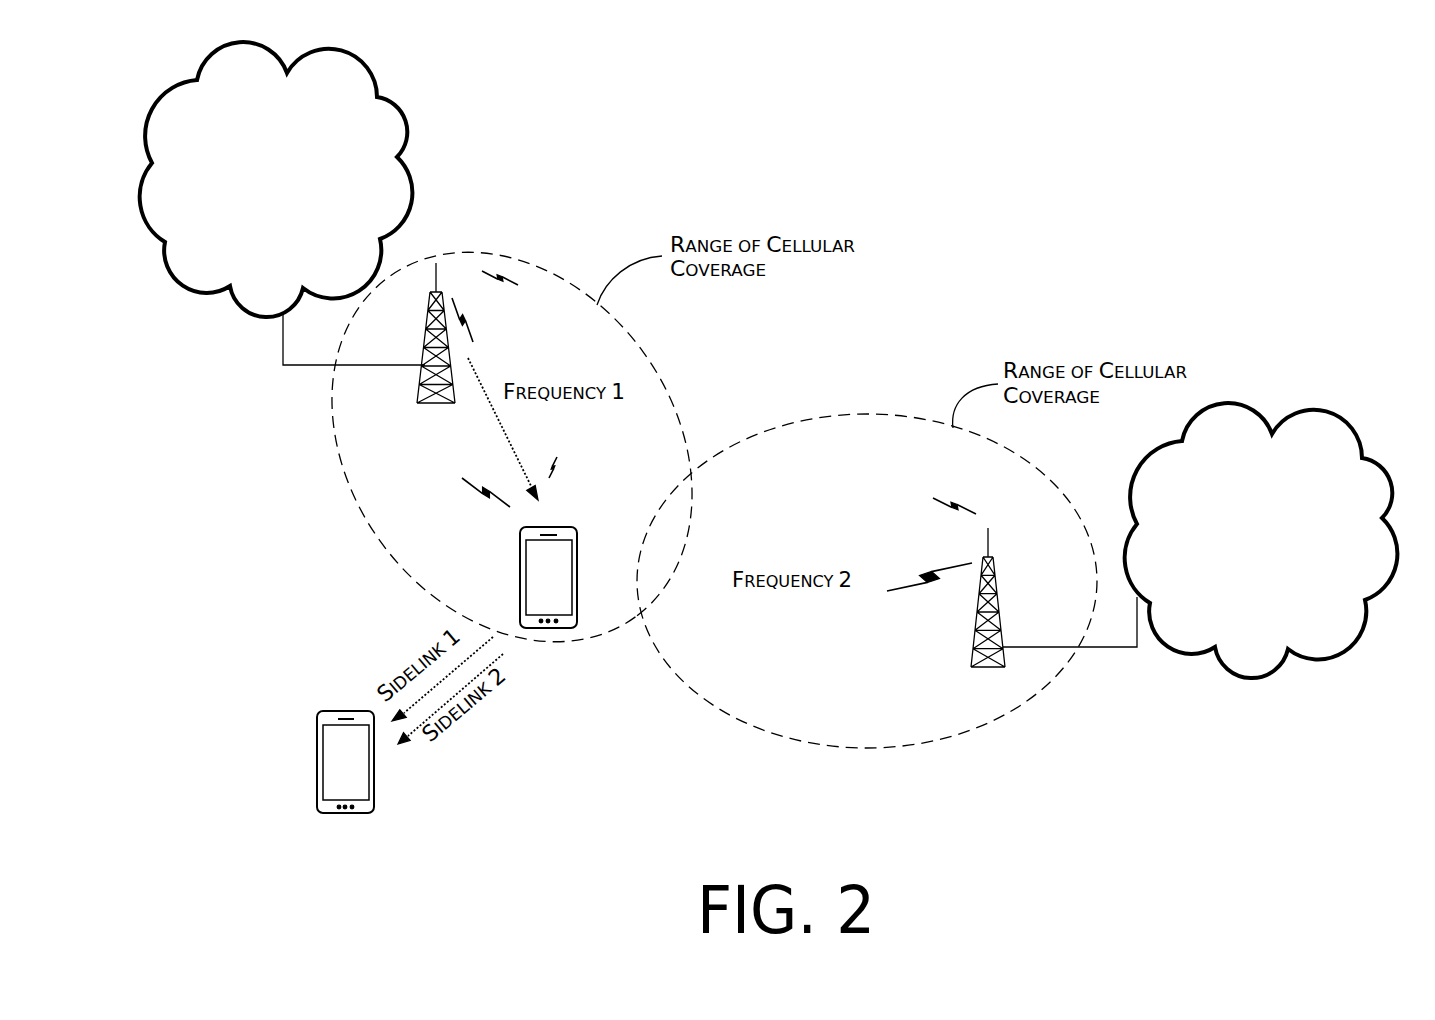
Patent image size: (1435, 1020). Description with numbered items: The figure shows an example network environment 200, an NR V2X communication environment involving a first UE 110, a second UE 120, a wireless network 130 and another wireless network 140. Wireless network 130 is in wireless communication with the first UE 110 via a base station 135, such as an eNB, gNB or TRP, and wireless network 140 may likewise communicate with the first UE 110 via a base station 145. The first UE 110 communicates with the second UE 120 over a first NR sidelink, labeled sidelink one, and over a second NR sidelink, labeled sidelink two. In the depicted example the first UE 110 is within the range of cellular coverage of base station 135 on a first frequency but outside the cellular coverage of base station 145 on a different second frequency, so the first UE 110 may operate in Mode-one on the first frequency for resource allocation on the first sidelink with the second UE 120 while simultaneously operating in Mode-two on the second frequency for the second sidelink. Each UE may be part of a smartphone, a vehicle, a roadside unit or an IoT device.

The network environment 200 is at (770, 52).
The first UE 110 is at (548, 527).
The second UE 120 is at (345, 711).
The wireless network 130 is at (293, 205).
The base station 135 is at (420, 380).
The wireless network 140 is at (1277, 566).
The base station 145 is at (998, 617).